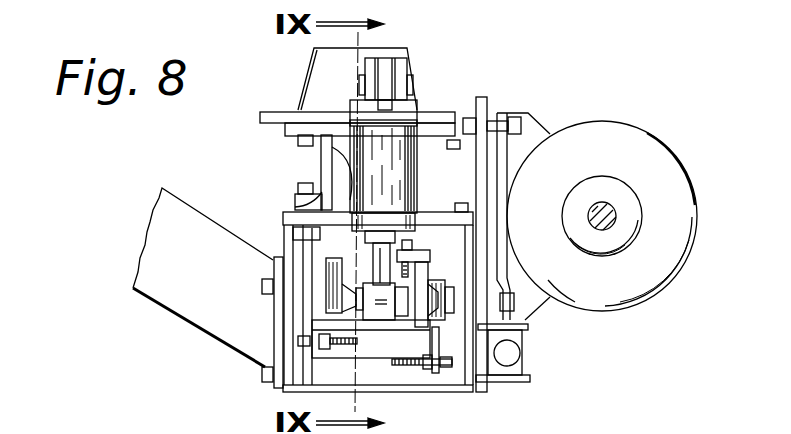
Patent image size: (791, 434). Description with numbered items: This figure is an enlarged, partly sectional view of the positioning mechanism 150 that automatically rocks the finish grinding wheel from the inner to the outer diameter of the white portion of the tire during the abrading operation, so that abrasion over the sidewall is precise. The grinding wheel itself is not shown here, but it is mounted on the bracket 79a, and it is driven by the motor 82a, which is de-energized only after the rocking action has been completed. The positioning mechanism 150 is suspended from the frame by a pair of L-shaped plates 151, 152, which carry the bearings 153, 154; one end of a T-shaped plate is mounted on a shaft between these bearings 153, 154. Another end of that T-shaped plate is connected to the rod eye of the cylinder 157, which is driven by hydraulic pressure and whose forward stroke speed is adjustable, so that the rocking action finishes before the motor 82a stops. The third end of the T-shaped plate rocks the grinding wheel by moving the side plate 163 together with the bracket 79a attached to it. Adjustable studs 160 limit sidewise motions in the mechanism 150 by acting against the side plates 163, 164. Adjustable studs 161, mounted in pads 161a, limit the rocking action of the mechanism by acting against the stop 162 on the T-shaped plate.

The positioning mechanism 150 is at (455, 80).
The cylinder 157 is at (412, 130).
The L-shaped plate 152 is at (420, 170).
The L-shaped plate 151 is at (320, 152).
The pad 161a is at (416, 255).
The adjustable stud 161 is at (408, 268).
The bearing 153 is at (350, 292).
The stop 162 is at (412, 285).
The adjustable stud 160 is at (353, 347).
The side plate 163 is at (283, 380).
The bracket 79a is at (190, 316).
The bearing 154 is at (487, 320).
The motor 82a is at (635, 278).
The side plate 164 is at (475, 373).